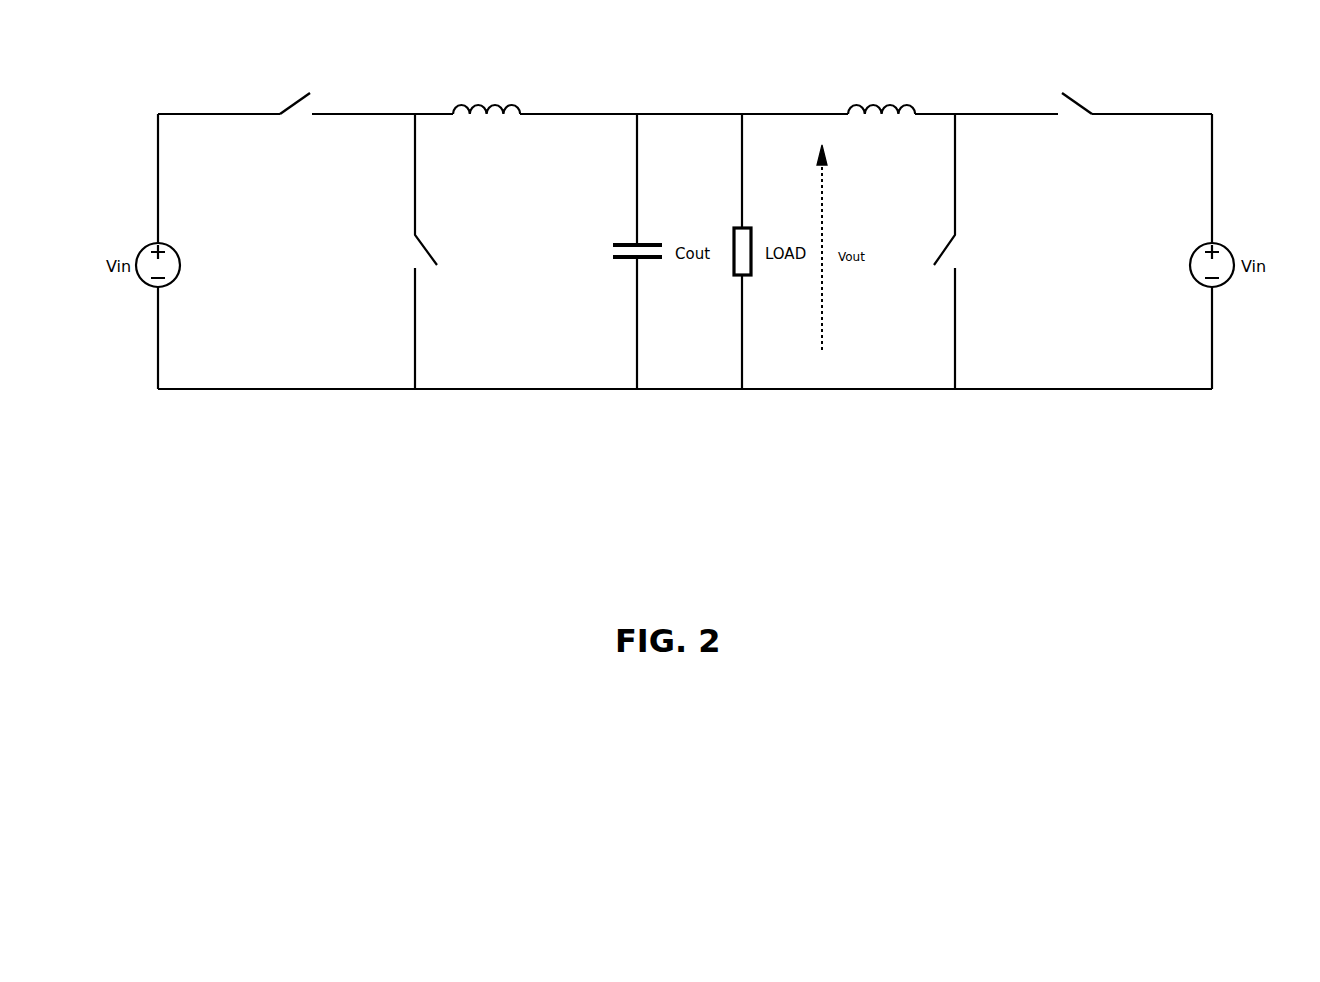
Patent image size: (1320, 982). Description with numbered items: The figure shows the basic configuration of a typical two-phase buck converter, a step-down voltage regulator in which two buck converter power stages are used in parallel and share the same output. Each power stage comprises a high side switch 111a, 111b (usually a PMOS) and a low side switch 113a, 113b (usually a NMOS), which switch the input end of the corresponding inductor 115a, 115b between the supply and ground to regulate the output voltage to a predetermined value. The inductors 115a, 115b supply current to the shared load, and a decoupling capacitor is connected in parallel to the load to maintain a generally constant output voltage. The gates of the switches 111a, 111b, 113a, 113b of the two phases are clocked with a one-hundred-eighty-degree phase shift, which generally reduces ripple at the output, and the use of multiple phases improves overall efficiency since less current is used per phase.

The high side switch 111a is at (297, 102).
The high side switch 111b is at (1077, 102).
The low side switch 113a is at (423, 245).
The low side switch 113b is at (943, 248).
The inductor 115a is at (515, 105).
The inductor 115b is at (910, 105).